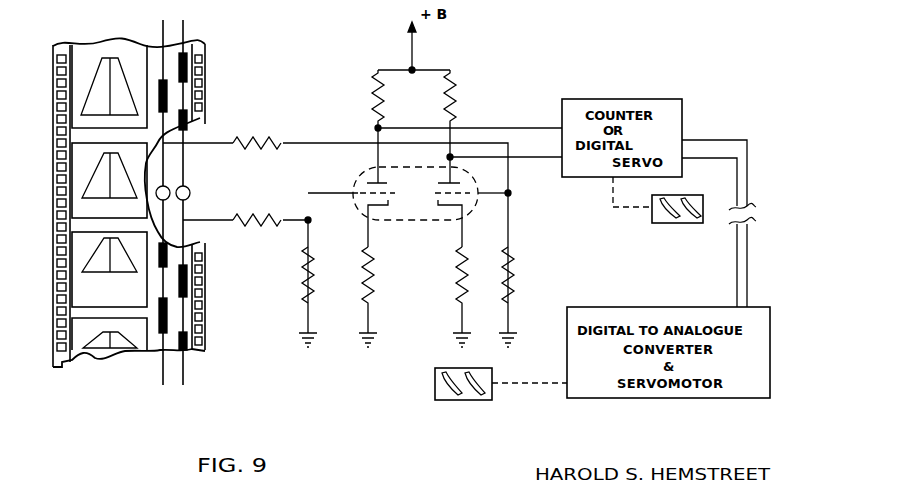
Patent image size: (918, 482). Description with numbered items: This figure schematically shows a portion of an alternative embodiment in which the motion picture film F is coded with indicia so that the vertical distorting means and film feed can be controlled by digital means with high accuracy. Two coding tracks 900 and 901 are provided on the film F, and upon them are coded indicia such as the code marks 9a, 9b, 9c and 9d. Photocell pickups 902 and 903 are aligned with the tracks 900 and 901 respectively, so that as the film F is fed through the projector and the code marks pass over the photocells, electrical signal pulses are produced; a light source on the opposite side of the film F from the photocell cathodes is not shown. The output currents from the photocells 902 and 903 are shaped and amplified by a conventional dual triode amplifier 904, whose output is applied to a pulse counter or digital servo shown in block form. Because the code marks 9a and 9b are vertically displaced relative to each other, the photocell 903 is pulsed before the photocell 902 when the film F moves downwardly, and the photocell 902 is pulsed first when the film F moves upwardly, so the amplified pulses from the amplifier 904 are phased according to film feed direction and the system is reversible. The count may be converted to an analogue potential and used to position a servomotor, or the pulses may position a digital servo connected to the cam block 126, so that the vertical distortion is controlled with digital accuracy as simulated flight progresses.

The motion picture film F is at (53, 259).
The code mark 9a is at (168, 99).
The code mark 9b is at (196, 118).
The code mark 9c is at (170, 247).
The code mark 9d is at (188, 285).
The coding track 900 is at (163, 363).
The coding track 901 is at (183, 367).
The photocell pickup 902 is at (168, 187).
The photocell pickup 903 is at (191, 193).
The dual triode amplifier 904 is at (427, 359).
The cam block 126 is at (654, 223).